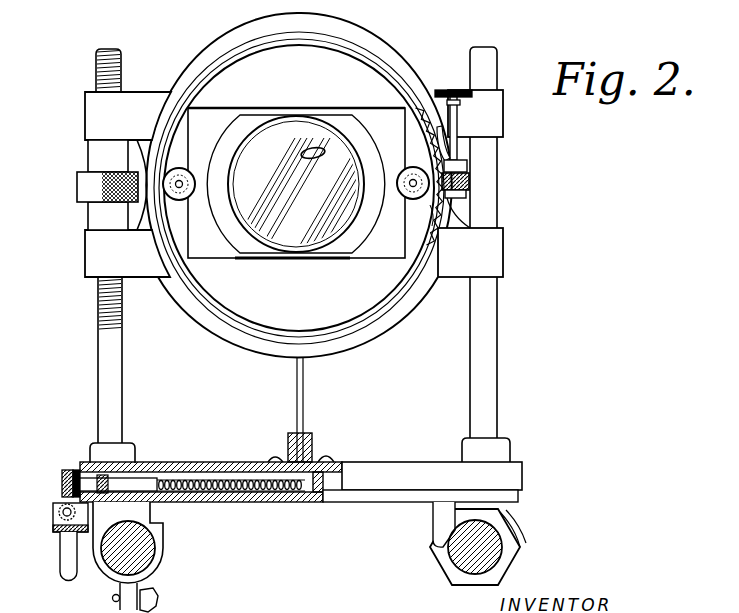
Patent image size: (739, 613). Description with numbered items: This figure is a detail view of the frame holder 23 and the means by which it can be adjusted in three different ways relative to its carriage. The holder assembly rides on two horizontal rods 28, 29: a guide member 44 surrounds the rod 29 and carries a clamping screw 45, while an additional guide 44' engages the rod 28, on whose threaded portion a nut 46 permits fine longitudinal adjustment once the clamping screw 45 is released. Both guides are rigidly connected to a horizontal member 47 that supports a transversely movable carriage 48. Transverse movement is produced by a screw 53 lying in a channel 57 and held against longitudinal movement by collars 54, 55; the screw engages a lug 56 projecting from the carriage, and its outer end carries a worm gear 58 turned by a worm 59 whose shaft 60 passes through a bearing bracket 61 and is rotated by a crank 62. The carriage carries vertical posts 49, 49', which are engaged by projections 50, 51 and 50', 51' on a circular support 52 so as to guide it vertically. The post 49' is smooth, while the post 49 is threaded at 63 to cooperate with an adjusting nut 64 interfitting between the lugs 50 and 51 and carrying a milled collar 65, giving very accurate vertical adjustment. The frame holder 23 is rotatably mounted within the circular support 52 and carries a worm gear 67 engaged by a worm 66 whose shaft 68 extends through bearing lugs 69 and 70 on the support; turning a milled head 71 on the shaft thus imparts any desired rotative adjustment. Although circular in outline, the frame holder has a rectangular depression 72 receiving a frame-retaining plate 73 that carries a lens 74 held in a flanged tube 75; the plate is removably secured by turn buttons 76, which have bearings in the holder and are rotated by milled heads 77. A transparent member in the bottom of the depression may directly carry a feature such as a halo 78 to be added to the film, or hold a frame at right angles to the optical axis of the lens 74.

The frame holder 23 is at (512, 66).
The rod 28 is at (490, 556).
The rod 29 is at (150, 553).
The guide member 44 is at (111, 557).
The additional guide 44' is at (427, 524).
The clamping screw 45 is at (156, 603).
The nut 46 is at (500, 540).
The horizontal member 47 is at (272, 503).
The carriage 48 is at (208, 462).
The post 49 is at (133, 418).
The post 49' is at (507, 254).
The projection 50 is at (106, 116).
The projection 50' is at (495, 101).
The projection 51 is at (103, 253).
The projection 51' is at (493, 252).
The circular support 52 is at (397, 50).
The screw 53 is at (165, 480).
The collar 54 is at (76, 470).
The collar 55 is at (122, 482).
The lug 56 is at (232, 462).
The channel 57 is at (243, 488).
The worm gear 58 is at (62, 482).
The worm 59 is at (56, 514).
The shaft 60 is at (68, 514).
The bearing bracket 61 is at (62, 534).
The crank 62 is at (66, 572).
The threaded portion 63 is at (333, 66).
The adjusting nut 64 is at (95, 157).
The milled collar 65 is at (88, 188).
The worm 66 is at (466, 181).
The worm gear 67 is at (433, 224).
The shaft 68 is at (455, 128).
The bearing lug 69 is at (460, 164).
The bearing lug 70 is at (465, 197).
The milled head 71 is at (449, 110).
The rectangular depression 72 is at (258, 108).
The frame-retaining plate 73 is at (380, 124).
The lens 74 is at (314, 246).
The flanged tube 75 is at (362, 200).
The roller 76 is at (402, 168).
The milled heads 77 is at (436, 210).
The halo 78 is at (311, 158).